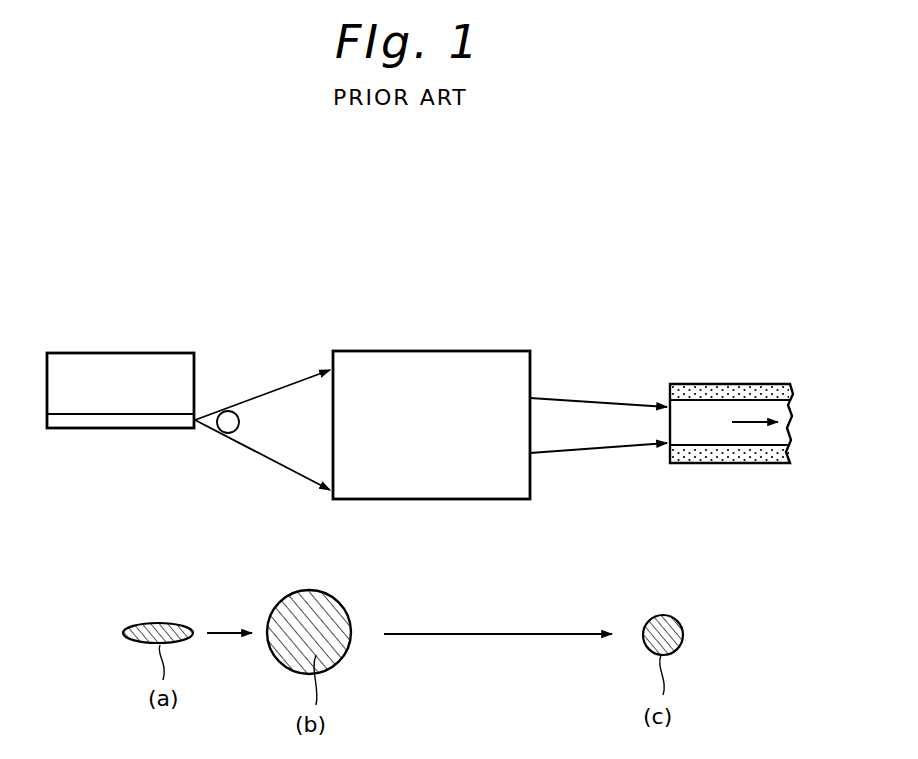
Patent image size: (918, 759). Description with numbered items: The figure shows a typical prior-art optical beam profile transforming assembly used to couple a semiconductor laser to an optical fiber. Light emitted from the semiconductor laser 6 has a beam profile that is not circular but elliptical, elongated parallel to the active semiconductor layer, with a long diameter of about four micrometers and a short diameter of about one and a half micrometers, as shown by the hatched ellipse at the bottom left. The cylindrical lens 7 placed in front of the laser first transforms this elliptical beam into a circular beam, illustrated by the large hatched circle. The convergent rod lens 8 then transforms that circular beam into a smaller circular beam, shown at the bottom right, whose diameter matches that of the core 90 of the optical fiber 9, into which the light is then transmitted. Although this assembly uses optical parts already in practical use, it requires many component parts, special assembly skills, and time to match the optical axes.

The semiconductor laser 6 is at (62, 350).
The cylindrical lens 7 is at (232, 410).
The convergent rod lens 8 is at (450, 360).
The optical fiber 9 is at (716, 383).
The core 90 is at (716, 425).